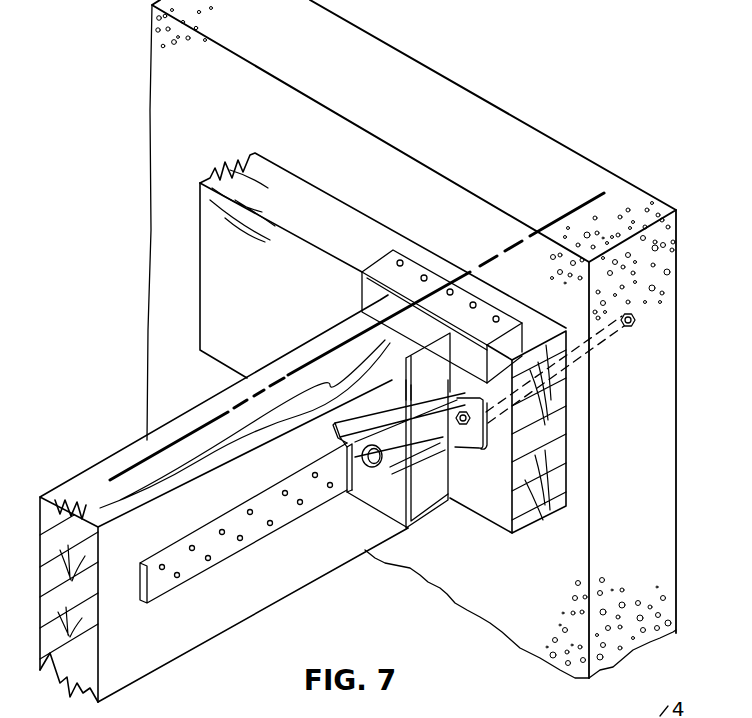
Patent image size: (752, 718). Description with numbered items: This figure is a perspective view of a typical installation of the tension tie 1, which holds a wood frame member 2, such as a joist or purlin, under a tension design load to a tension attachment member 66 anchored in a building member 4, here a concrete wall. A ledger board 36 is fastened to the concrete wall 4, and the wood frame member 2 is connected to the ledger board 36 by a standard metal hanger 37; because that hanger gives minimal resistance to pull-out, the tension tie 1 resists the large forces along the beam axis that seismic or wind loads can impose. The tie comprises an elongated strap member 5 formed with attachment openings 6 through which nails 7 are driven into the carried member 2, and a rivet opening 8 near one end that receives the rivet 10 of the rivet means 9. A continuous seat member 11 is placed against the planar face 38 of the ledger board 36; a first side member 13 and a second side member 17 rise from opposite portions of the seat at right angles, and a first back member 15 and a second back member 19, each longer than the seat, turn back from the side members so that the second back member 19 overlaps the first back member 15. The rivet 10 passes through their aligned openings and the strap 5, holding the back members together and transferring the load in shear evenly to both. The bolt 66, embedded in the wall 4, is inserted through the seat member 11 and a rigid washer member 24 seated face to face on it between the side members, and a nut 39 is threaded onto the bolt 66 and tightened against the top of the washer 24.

The tension tie 1 is at (343, 421).
The wood frame member 2 is at (104, 438).
The building member 4 is at (511, 110).
The elongated strap member 5 is at (270, 497).
The attachment openings 6 is at (221, 530).
The nails 7 is at (314, 513).
The rivet opening 8 is at (607, 227).
The rivet means 9 is at (368, 469).
The rivet 10 is at (372, 472).
The continuous seat member 11 is at (484, 422).
The first side member 13 is at (440, 443).
The first back member 15 is at (348, 509).
The second side member 17 is at (430, 401).
The second back member 19 is at (330, 422).
The washer member 24 is at (464, 430).
The ledger board 36 is at (383, 343).
The standard metal hanger 37 is at (488, 307).
The planar face 38 is at (282, 311).
The nut 39 is at (428, 400).
The tension attachment member 66 is at (628, 332).